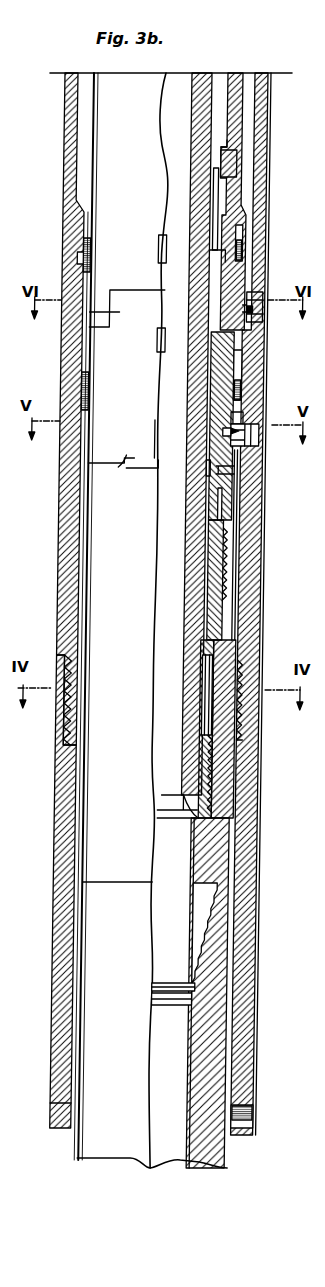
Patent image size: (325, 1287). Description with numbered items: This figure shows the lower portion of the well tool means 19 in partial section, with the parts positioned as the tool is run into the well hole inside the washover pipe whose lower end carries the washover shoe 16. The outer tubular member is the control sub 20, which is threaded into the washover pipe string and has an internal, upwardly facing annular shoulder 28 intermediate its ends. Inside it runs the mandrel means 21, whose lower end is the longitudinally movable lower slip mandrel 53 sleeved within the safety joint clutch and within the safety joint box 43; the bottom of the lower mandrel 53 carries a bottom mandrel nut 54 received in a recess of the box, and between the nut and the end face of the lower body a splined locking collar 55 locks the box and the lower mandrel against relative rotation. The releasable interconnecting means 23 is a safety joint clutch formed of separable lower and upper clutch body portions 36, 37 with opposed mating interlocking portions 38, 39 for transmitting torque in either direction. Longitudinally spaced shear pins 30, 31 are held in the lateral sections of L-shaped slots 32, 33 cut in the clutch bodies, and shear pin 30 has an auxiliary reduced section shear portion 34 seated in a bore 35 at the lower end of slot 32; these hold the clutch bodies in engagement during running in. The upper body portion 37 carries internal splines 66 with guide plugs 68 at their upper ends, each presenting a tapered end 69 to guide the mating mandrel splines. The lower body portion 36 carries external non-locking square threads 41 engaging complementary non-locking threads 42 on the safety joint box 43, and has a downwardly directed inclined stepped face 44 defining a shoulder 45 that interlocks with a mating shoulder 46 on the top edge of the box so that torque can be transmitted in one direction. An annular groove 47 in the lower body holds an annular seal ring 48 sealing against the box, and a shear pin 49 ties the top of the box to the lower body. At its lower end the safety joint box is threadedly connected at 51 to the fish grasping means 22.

The washover shoe 16 is at (70, 920).
The well tool means 19 is at (94, 128).
The control sub 20 is at (76, 546).
The mandrel means 21 is at (186, 828).
The fish grasping means 22 is at (230, 1065).
The releasable interconnecting means 23 is at (112, 363).
The annular shoulder 28 is at (84, 258).
The shear pin 30 is at (264, 437).
The shear pin 31 is at (258, 324).
The slot 32 is at (242, 395).
The slot 33 is at (243, 242).
The auxiliary reduced section shear portion 34 is at (242, 430).
The bore 35 is at (226, 432).
The lower clutch body portion 36 is at (236, 353).
The upper clutch body portion 37 is at (238, 200).
The interlocking portion 38 is at (88, 318).
The interlocking portion 39 is at (88, 272).
The non-locking square threads 41 is at (229, 566).
The non-locking threads 42 is at (222, 580).
The safety joint box 43 is at (240, 610).
The inclined stepped face 44 is at (149, 484).
The shoulder 45 is at (116, 461).
The mating shoulder 46 is at (124, 467).
The annular groove 47 is at (218, 466).
The annular seal ring 48 is at (228, 475).
The shear pin 49 is at (234, 491).
The threaded connection 51 is at (218, 922).
The lower slip mandrel 53 is at (202, 594).
The bottom mandrel nut 54 is at (216, 800).
The splined locking collar 55 is at (218, 720).
The internal splines 66 is at (221, 181).
The guide plug 68 is at (233, 163).
The tapered end 69 is at (232, 148).